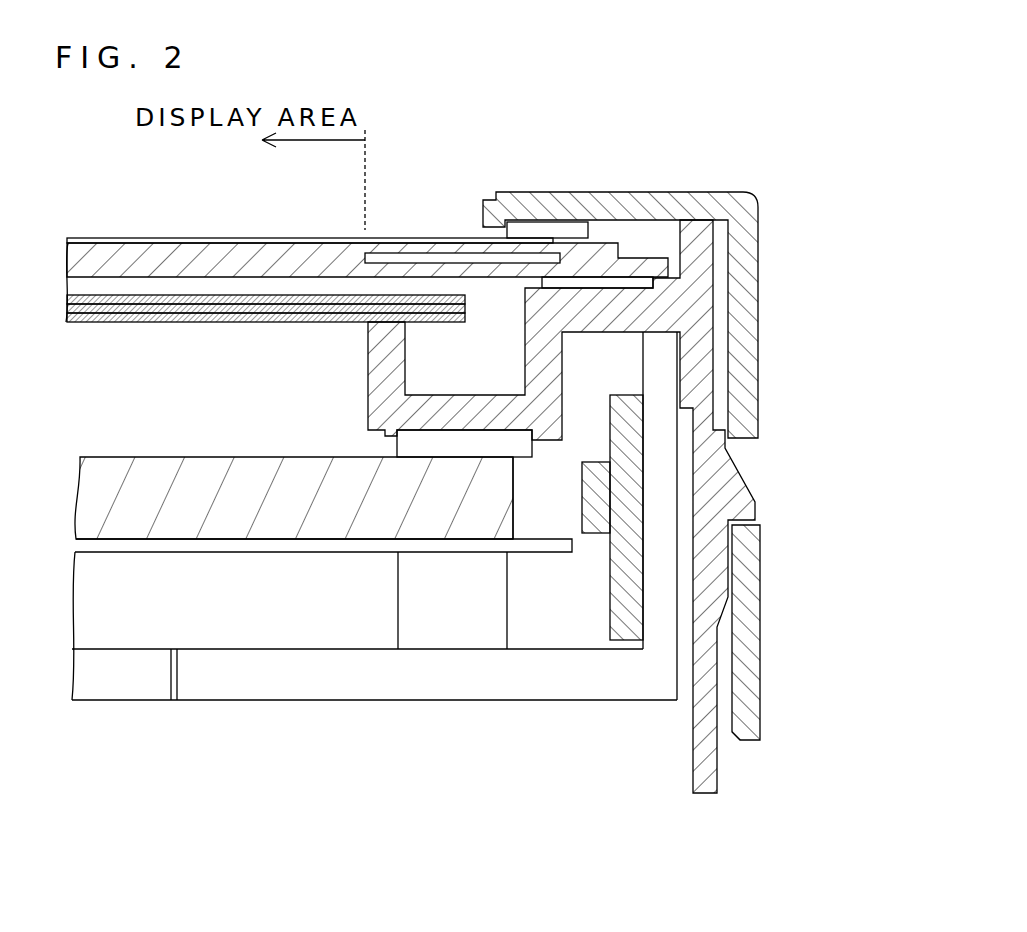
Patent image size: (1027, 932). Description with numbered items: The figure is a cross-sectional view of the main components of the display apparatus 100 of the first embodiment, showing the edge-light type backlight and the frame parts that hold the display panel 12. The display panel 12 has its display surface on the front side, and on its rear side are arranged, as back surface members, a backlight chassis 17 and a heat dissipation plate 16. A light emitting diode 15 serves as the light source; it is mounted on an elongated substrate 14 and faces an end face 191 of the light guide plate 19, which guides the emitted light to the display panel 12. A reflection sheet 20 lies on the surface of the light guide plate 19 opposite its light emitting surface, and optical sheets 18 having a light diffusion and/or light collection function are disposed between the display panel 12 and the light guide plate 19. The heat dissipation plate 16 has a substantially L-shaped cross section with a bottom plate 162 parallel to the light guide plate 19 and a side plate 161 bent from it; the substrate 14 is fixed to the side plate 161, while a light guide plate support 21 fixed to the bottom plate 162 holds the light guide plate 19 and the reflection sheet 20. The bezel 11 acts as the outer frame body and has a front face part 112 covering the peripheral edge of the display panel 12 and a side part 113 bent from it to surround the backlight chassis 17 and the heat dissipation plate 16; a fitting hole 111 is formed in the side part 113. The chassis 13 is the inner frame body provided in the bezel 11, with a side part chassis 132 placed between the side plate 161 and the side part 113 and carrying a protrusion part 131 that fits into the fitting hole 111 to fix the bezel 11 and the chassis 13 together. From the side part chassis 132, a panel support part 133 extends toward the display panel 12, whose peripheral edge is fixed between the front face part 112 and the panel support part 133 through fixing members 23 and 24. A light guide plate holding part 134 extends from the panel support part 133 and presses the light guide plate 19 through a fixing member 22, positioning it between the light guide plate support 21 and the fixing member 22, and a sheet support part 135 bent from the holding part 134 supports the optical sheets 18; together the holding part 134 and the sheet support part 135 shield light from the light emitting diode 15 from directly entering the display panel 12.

The display apparatus 100 is at (822, 127).
The bezel 11 is at (661, 428).
The fitting hole 111 is at (745, 453).
The front face part 112 is at (646, 192).
The side part 113 is at (765, 652).
The display panel 12 is at (238, 247).
The chassis 13 is at (561, 523).
The protrusion part 131 is at (742, 495).
The side part chassis 132 is at (710, 376).
The panel support part 133 is at (650, 314).
The light guide plate holding part 134 is at (433, 424).
The sheet support part 135 is at (370, 362).
The substrate 14 is at (625, 640).
The light emitting diode (LED) 15 is at (595, 533).
The heat dissipation plate 16 is at (451, 569).
The side plate 161 is at (665, 585).
The bottom plate 162 is at (212, 680).
The backlight chassis 17 is at (160, 688).
The optical sheets 18 is at (67, 317).
The light guide plate 19 is at (314, 591).
The end face 191 is at (514, 497).
The reflection sheet 20 is at (112, 547).
The light guide plate support 21 is at (418, 640).
The fixing member 22 is at (405, 445).
The fixing member 23 is at (600, 283).
The fixing member 24 is at (547, 227).